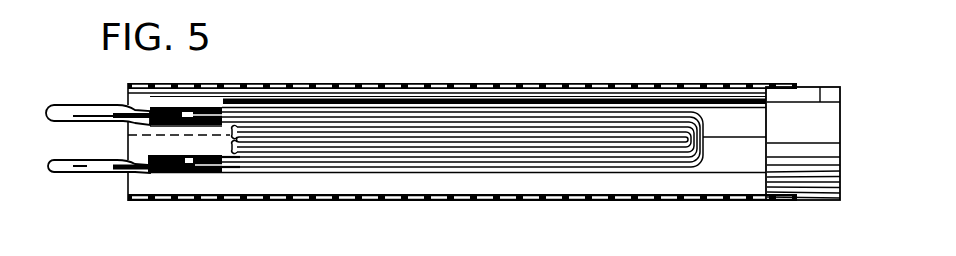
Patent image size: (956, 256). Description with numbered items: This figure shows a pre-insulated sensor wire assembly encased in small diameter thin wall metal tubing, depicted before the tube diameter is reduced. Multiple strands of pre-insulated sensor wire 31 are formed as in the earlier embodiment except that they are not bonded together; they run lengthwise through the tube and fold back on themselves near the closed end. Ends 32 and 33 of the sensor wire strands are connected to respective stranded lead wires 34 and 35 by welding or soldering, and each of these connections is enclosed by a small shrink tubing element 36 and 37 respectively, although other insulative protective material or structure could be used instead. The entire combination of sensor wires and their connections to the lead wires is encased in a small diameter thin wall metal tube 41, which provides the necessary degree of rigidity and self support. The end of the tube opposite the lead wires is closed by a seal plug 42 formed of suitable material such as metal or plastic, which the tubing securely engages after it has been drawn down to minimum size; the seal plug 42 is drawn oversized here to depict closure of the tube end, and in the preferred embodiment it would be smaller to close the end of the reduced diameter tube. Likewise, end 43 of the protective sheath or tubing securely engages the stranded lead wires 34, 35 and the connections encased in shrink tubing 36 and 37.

The pre-insulated sensor wire 31 is at (652, 168).
The end of sensor wire 32 is at (187, 173).
The end of sensor wire 33 is at (186, 107).
The stranded lead wire 34 is at (65, 174).
The stranded lead wire 35 is at (77, 123).
The shrink tubing element 36 is at (222, 173).
The shrink tubing element 37 is at (163, 125).
The thin wall metal tube 41 is at (430, 83).
The seal plug 42 is at (817, 87).
The end of tube 43 is at (127, 84).